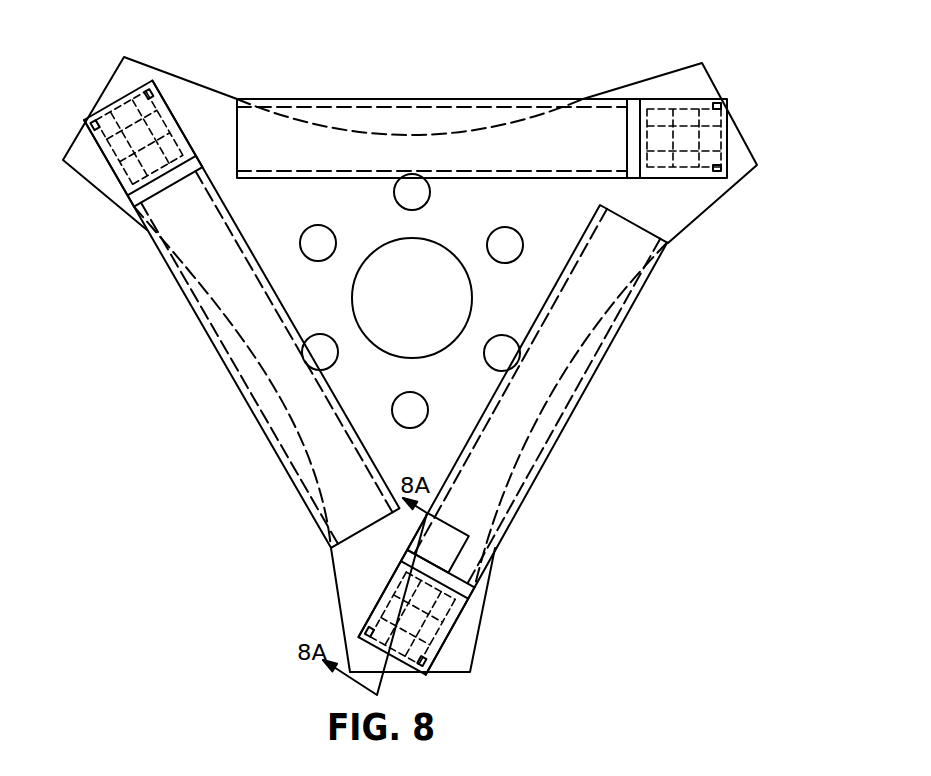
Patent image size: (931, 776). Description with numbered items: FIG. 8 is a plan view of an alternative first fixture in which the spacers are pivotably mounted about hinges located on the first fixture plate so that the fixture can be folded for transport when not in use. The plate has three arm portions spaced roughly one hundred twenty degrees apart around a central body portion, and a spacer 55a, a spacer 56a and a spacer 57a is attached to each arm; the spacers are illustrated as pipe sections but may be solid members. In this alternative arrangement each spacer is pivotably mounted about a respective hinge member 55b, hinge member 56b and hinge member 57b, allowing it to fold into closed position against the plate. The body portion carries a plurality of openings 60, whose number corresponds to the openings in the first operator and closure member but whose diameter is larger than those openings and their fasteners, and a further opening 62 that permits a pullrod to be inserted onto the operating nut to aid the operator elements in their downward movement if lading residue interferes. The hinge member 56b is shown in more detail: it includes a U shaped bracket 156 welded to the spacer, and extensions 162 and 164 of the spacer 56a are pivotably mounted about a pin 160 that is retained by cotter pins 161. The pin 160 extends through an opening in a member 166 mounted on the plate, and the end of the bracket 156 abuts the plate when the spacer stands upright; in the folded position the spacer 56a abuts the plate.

The spacer 55a is at (393, 118).
The hinge member 55b is at (693, 182).
The spacer 56a is at (548, 407).
The hinge member 56b is at (448, 635).
The spacer 57a is at (233, 333).
The hinge member 57b is at (102, 158).
The openings 60 is at (488, 250).
The opening 62 is at (470, 303).
The U shaped bracket 156 is at (400, 655).
The pin 160 is at (410, 622).
The cotter pins 161 is at (452, 656).
The extension 162 is at (355, 622).
The extension 164 is at (440, 660).
The member 166 is at (425, 590).